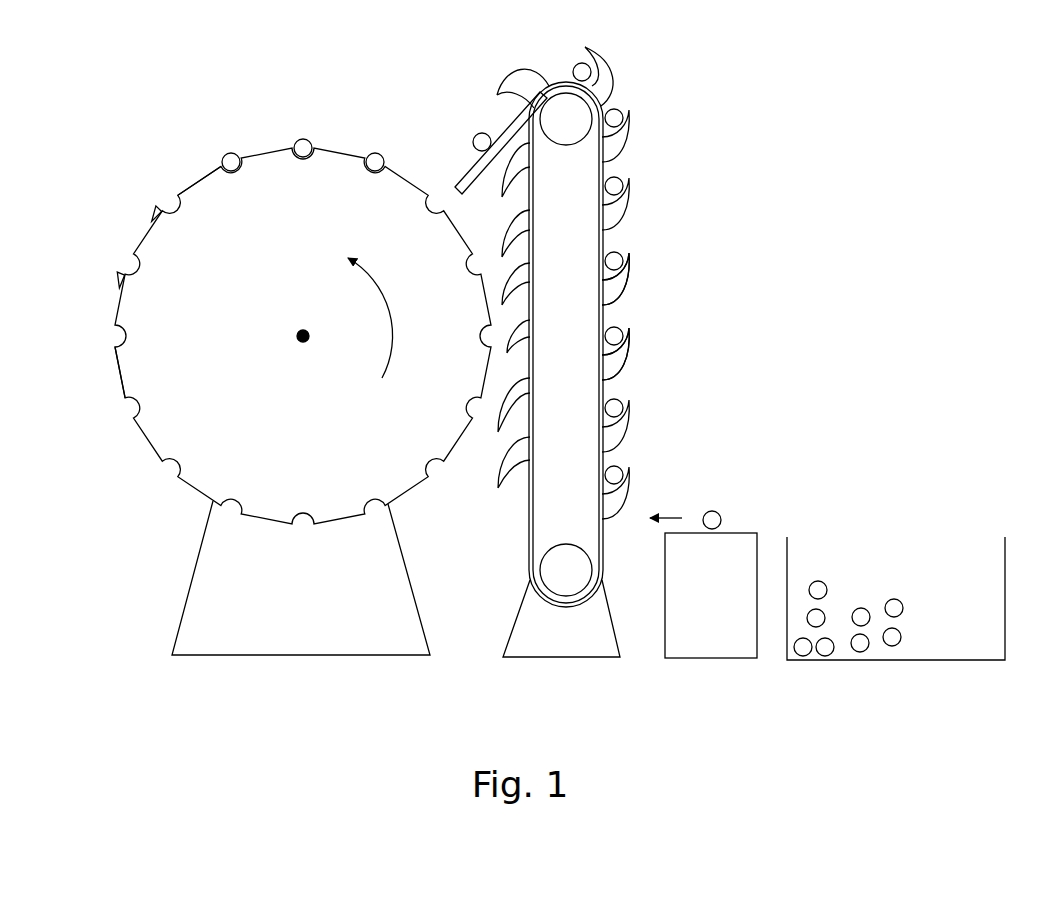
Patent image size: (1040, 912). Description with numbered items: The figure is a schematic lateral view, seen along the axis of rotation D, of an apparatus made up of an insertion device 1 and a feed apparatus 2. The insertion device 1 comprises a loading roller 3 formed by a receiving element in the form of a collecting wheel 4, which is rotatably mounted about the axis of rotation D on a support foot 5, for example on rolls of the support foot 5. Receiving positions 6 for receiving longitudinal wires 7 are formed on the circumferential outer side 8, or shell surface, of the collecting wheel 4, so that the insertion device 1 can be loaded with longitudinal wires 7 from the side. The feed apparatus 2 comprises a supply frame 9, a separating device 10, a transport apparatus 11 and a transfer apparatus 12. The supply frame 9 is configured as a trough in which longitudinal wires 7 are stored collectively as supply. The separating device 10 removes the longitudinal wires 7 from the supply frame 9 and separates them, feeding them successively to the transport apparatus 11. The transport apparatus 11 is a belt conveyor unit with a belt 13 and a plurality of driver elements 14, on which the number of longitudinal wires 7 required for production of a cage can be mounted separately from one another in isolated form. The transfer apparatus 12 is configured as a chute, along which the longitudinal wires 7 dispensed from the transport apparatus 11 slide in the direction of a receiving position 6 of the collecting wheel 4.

The insertion device 1 is at (163, 663).
The feed apparatus 2 is at (705, 673).
The loading roller 3 is at (113, 252).
The collecting wheel 4 is at (118, 368).
The support foot 5 is at (193, 613).
The receiving positions 6 is at (160, 211).
The longitudinal wires 7 is at (233, 153).
The circumferential outer side 8 is at (200, 170).
The supply frame 9 is at (972, 674).
The separating device 10 is at (762, 516).
The transport apparatus 11 is at (560, 673).
The transfer apparatus 12 is at (489, 93).
The belt 13 is at (606, 233).
The driver elements 14 is at (617, 283).
The axis of rotation D is at (300, 342).